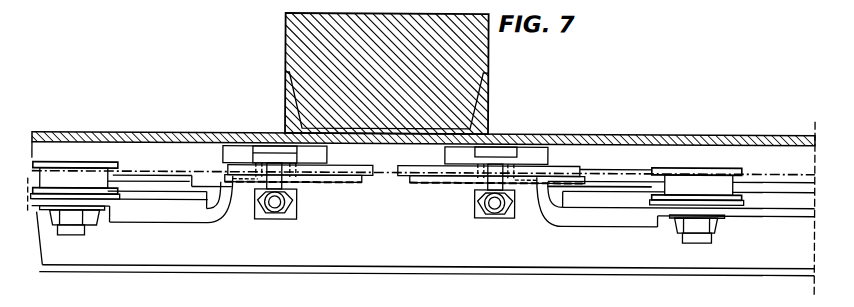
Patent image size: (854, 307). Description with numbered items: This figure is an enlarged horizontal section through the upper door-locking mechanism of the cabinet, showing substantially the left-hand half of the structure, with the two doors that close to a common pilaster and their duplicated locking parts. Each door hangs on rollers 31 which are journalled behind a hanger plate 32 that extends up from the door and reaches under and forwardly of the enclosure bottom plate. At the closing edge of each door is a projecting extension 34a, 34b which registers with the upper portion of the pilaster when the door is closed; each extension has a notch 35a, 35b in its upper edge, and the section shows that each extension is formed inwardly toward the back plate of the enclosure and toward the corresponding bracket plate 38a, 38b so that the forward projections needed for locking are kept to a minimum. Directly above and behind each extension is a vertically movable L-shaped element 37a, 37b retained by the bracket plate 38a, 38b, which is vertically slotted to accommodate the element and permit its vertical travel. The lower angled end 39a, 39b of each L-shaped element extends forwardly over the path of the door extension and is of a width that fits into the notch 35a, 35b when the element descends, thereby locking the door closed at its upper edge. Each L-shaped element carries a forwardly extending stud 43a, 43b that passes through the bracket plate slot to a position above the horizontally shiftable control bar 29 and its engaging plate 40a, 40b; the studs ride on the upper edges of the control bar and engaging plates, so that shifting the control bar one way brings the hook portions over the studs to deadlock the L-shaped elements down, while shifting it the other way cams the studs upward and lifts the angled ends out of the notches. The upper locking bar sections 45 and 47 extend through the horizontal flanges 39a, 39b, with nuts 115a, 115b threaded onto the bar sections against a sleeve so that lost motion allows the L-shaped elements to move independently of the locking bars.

The control bar 29 is at (618, 171).
The rollers 31 is at (48, 199).
The hanger plate 32 is at (102, 207).
The extension 34a is at (557, 224).
The extension 34b is at (213, 211).
The notch 35a is at (470, 182).
The notch 35b is at (315, 182).
The L-shaped element 37a is at (497, 150).
The L-shaped element 37b is at (268, 150).
The bracket plate 38a is at (528, 150).
The bracket plate 38b is at (233, 150).
The lower angled end 39a is at (507, 217).
The lower angled end 39b is at (255, 212).
The engaging plate 40a is at (430, 181).
The engaging plate 40b is at (350, 178).
The stud 43a is at (490, 188).
The stud 43b is at (283, 186).
The upper locking bar section 45 is at (490, 207).
The upper locking bar section 47 is at (277, 204).
The nut 115a is at (510, 210).
The nut 115b is at (265, 197).